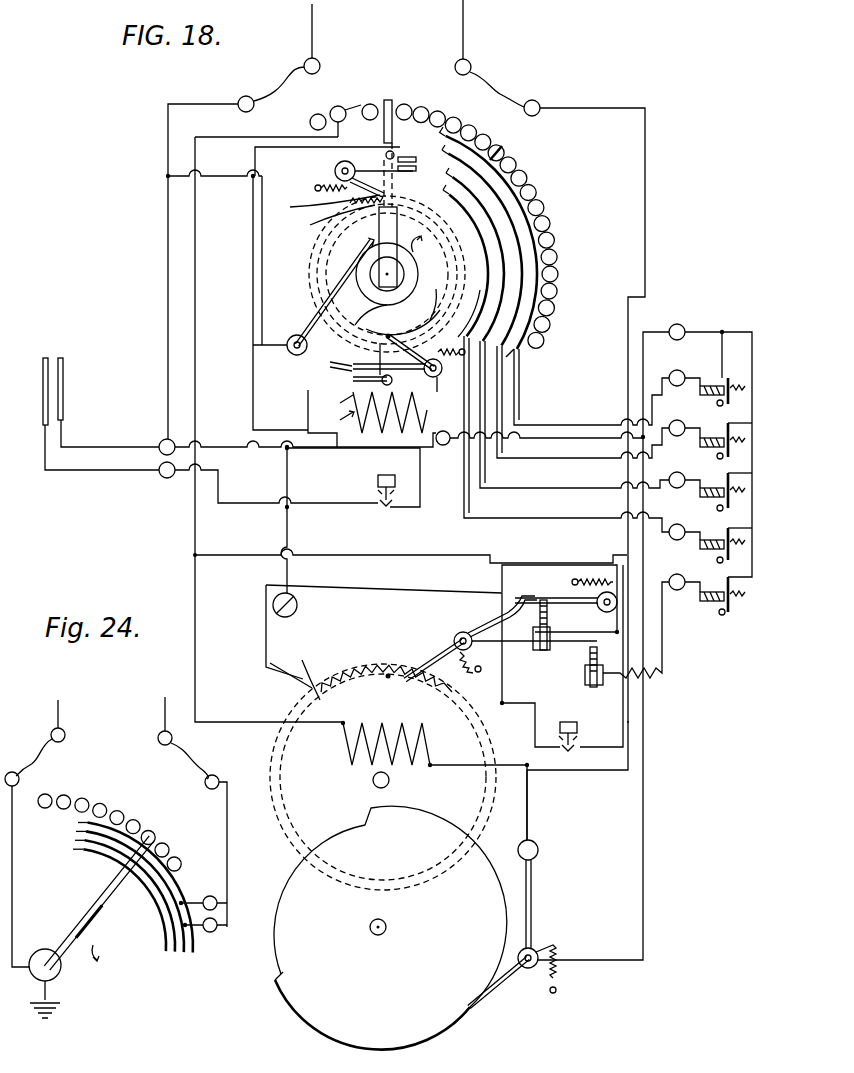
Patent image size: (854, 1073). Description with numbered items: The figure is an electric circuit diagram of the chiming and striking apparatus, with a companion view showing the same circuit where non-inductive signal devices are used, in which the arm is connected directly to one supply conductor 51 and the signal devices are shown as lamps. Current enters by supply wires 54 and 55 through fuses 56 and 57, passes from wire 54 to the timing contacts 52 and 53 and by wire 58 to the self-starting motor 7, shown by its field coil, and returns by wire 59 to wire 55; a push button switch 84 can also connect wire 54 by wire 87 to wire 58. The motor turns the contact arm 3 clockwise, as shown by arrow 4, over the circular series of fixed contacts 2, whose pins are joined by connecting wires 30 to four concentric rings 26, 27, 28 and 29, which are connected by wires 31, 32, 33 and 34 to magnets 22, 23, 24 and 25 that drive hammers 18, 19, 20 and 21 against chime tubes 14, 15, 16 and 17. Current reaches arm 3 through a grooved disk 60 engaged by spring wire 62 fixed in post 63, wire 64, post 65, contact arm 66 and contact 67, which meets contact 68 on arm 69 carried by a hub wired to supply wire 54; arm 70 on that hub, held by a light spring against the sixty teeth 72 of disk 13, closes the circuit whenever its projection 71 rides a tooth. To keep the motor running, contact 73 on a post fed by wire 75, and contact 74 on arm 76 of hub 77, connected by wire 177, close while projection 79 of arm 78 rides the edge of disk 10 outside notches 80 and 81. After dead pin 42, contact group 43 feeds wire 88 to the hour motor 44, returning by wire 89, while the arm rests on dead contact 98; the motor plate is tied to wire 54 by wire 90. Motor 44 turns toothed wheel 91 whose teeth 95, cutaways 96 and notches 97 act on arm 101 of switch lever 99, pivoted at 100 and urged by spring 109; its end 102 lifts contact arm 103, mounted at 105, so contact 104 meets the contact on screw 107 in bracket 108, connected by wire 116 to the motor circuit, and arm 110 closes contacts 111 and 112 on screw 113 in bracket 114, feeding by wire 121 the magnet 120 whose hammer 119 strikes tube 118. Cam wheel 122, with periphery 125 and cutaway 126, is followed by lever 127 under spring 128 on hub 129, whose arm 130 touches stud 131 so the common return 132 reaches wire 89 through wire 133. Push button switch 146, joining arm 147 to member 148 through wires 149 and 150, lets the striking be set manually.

In FIG. 18, the fixed contacts 2 is at (410, 106).
In FIG. 24, the fixed contacts 2 is at (120, 810).
In FIG. 18, the contact arm 3 is at (378, 230).
In FIG. 24, the contact arm 3 is at (88, 920).
In FIG. 18, the arrow 4 is at (420, 243).
In FIG. 24, the arrow 4 is at (100, 951).
In FIG. 18, the self-starting electric motor 7 is at (341, 415).
In FIG. 18, the disk 10 is at (470, 314).
In FIG. 18, the toothed disk 13 is at (308, 260).
In FIG. 18, the chime tube 14 is at (717, 403).
In FIG. 18, the chime tube 15 is at (717, 457).
In FIG. 18, the chime tube 16 is at (717, 508).
In FIG. 18, the chime tube 17 is at (717, 560).
In FIG. 18, the hammer 18 is at (733, 402).
In FIG. 18, the hammer 19 is at (733, 456).
In FIG. 18, the hammer 20 is at (733, 508).
In FIG. 18, the hammer 21 is at (733, 558).
In FIG. 18, the magnet 22 is at (712, 384).
In FIG. 18, the magnet 23 is at (710, 437).
In FIG. 18, the magnet 24 is at (710, 487).
In FIG. 18, the magnet 25 is at (712, 539).
In FIG. 18, the circular metal ring 26 is at (539, 312).
In FIG. 24, the circular metal ring 26 is at (178, 892).
In FIG. 18, the circular metal ring 27 is at (525, 290).
In FIG. 24, the circular metal ring 27 is at (172, 915).
In FIG. 18, the circular metal ring 28 is at (508, 270).
In FIG. 24, the circular metal ring 28 is at (165, 935).
In FIG. 18, the circular metal ring 29 is at (500, 285).
In FIG. 24, the circular metal ring 29 is at (162, 955).
In FIG. 18, the connecting wires 30 is at (497, 145).
In FIG. 18, the wire 31 is at (573, 425).
In FIG. 18, the wire 32 is at (572, 458).
In FIG. 18, the wire 33 is at (568, 488).
In FIG. 18, the wire 34 is at (517, 348).
In FIG. 18, the dead contact post 42 is at (316, 114).
In FIG. 18, the group of two connected contacts 43 is at (338, 105).
In FIG. 18, the second motor 44 is at (347, 748).
In FIG. 24, the conductor 51 is at (18, 858).
In FIG. 18, the timing contact 52 is at (63, 366).
In FIG. 18, the timing contact 53 is at (42, 365).
In FIG. 18, the supply wire 54 is at (122, 447).
In FIG. 24, the supply wire 54 is at (60, 712).
In FIG. 18, the supply wire 55 is at (468, 44).
In FIG. 24, the supply wire 55 is at (164, 708).
In FIG. 18, the fuse 56 is at (271, 85).
In FIG. 24, the fuse 56 is at (28, 755).
In FIG. 18, the fuse 57 is at (505, 87).
In FIG. 24, the fuse 57 is at (200, 759).
In FIG. 18, the wire 58 is at (308, 412).
In FIG. 18, the return wire 59 is at (645, 224).
In FIG. 24, the return wire 59 is at (227, 828).
In FIG. 18, the disk 60 is at (371, 317).
In FIG. 24, the disk 60 is at (60, 975).
In FIG. 18, the spring wire contact 62 is at (305, 335).
In FIG. 18, the insulated post 63 is at (296, 355).
In FIG. 18, the wire 64 is at (253, 260).
In FIG. 18, the insulated post 65 is at (394, 152).
In FIG. 18, the contact arm 66 is at (422, 148).
In FIG. 18, the contact 67 is at (417, 168).
In FIG. 18, the co-operating contact 68 is at (402, 175).
In FIG. 18, the arm 69 is at (374, 162).
In FIG. 18, the arm 70 is at (356, 193).
In FIG. 18, the end projection 71 is at (336, 218).
In FIG. 18, the teeth 72 is at (335, 203).
In FIG. 18, the circuit closing contact 73 is at (352, 380).
In FIG. 18, the contact 74 is at (337, 357).
In FIG. 18, the wire 75 is at (339, 400).
In FIG. 18, the arm 76 is at (390, 398).
In FIG. 18, the hub 77 is at (442, 379).
In FIG. 18, the arm 78 is at (417, 347).
In FIG. 18, the transverse projection 79 is at (403, 320).
In FIG. 18, the notch 80 is at (387, 276).
In FIG. 18, the notch 81 is at (435, 304).
In FIG. 18, the push button switch 84 is at (382, 476).
In FIG. 18, the wire 87 is at (236, 447).
In FIG. 18, the circuit wire 88 is at (262, 135).
In FIG. 18, the circuit wire 89 is at (455, 766).
In FIG. 18, the connecting wire 90 is at (288, 524).
In FIG. 18, the mutilated toothed wheel 91 is at (294, 671).
In FIG. 18, the teeth 95 is at (355, 668).
In FIG. 18, the cutaway space 96 is at (385, 675).
In FIG. 18, the notch 97 is at (383, 777).
In FIG. 18, the dead contact 98 is at (399, 104).
In FIG. 18, the switch lever 99 is at (425, 655).
In FIG. 18, the pivot 100 is at (458, 630).
In FIG. 18, the transversely extending arm 101 is at (392, 681).
In FIG. 18, the free end 102 is at (490, 625).
In FIG. 18, the contact arm 103 is at (524, 597).
In FIG. 18, the contact 104 is at (559, 612).
In FIG. 18, the mounting point 105 is at (596, 609).
In FIG. 18, the screw 107 is at (569, 622).
In FIG. 18, the fixed bracket 108 is at (557, 644).
In FIG. 18, the spring 109 is at (504, 668).
In FIG. 18, the arm 110 is at (522, 642).
In FIG. 18, the contact 111 is at (608, 664).
In FIG. 18, the contact 112 is at (614, 658).
In FIG. 18, the screw 113 is at (585, 672).
In FIG. 18, the bracket 114 is at (594, 686).
In FIG. 18, the wire circuit 116 is at (530, 563).
In FIG. 18, the tube 118 is at (721, 616).
In FIG. 24, the tube 118 is at (210, 896).
In FIG. 18, the hammer 119 is at (732, 608).
In FIG. 24, the hammer 119 is at (210, 932).
In FIG. 18, the electro-magnet 120 is at (706, 603).
In FIG. 18, the wire 121 is at (664, 660).
In FIG. 18, the cam wheel 122 is at (312, 1025).
In FIG. 18, the circular periphery 125 is at (435, 1032).
In FIG. 18, the cutaway 126 is at (283, 873).
In FIG. 18, the lever 127 is at (498, 990).
In FIG. 18, the spring 128 is at (558, 980).
In FIG. 18, the pivoted hub 129 is at (534, 948).
In FIG. 18, the arm 130 is at (533, 890).
In FIG. 18, the fixed stud 131 is at (536, 842).
In FIG. 18, the common return 132 is at (690, 325).
In FIG. 18, the connecting wire 133 is at (528, 797).
In FIG. 18, the push button switch 146 is at (563, 722).
In FIG. 18, the contact arm 147 is at (560, 750).
In FIG. 18, the contact member 148 is at (576, 750).
In FIG. 18, the connecting wire 149 is at (515, 703).
In FIG. 18, the connecting wire 150 is at (595, 730).
In FIG. 18, the circuit wire 177 is at (262, 305).